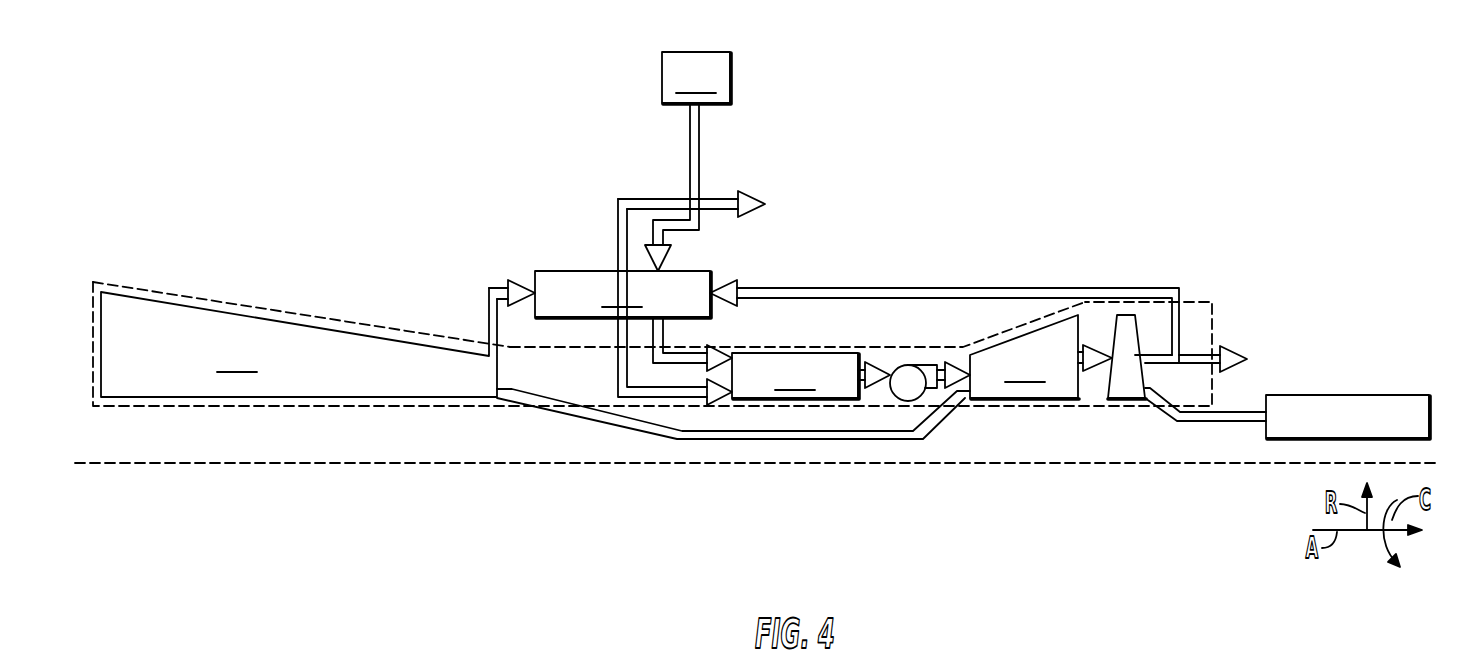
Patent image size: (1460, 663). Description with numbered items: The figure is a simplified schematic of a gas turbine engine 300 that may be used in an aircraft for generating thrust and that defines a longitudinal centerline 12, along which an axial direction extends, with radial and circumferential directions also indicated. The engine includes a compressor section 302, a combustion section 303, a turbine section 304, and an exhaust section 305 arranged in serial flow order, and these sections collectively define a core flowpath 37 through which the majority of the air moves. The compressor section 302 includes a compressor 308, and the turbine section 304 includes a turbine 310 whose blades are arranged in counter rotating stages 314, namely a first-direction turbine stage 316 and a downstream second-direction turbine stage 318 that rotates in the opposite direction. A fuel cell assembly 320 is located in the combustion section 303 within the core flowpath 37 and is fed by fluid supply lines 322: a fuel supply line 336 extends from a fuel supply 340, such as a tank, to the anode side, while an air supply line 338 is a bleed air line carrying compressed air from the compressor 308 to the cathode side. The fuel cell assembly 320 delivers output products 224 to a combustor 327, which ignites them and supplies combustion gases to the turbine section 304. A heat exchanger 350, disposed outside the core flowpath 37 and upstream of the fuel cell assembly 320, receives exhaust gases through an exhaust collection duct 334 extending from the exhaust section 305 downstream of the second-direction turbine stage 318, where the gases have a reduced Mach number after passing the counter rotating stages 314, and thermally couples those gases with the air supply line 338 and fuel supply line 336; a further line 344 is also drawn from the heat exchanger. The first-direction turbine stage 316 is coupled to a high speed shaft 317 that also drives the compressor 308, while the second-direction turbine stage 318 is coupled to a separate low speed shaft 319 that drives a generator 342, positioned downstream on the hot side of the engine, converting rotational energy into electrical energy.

The gas turbine engine 300 is at (1252, 72).
The compressor section 302 is at (382, 220).
The core flowpath 37 is at (260, 306).
The combustion section 303 is at (811, 310).
The compressor 308 is at (299, 342).
The fluid supply lines 322 is at (635, 204).
The air supply line 338 is at (497, 287).
The fuel supply line 336 is at (695, 152).
The fuel supply 340 is at (696, 78).
The bypass conduit 344 is at (634, 201).
The heat exchanger 350 is at (633, 321).
The fuel cell assembly 320 is at (795, 376).
The output products 224 is at (880, 378).
The combustor 327 is at (915, 366).
The first-direction turbine stage 316 is at (1041, 357).
The second-direction turbine stage 318 is at (1122, 381).
The exhaust collection duct 334 is at (940, 288).
The turbine 310 is at (972, 275).
The counter rotating stages 314 is at (1070, 272).
The turbine section 304 is at (1137, 282).
The exhaust section 305 is at (1196, 329).
The high speed shaft 317 is at (804, 437).
The low speed shaft 319 is at (1240, 423).
The generator 342 is at (1410, 400).
The longitudinal centerline 12 is at (203, 465).